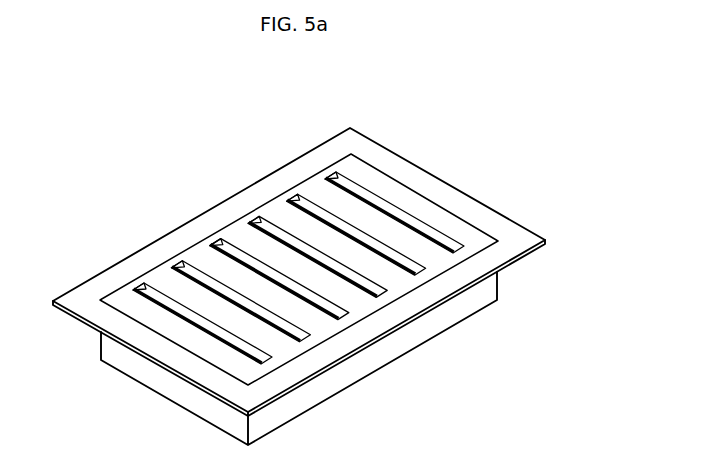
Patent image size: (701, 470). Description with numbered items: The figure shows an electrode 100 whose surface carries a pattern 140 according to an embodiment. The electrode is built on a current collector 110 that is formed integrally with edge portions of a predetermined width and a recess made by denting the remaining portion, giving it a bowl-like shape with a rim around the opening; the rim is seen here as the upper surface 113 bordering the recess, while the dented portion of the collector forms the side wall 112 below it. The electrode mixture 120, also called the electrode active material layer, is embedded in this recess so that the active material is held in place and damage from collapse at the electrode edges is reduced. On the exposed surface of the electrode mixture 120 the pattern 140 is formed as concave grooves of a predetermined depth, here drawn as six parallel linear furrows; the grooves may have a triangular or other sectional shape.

The heating device assembly 100 is at (118, 112).
The current collector 110 is at (258, 188).
The side wall of housing 112 is at (485, 300).
The upper flange surface 113 is at (485, 200).
The electrode mixture 120 is at (318, 195).
The pattern 140 is at (362, 195).